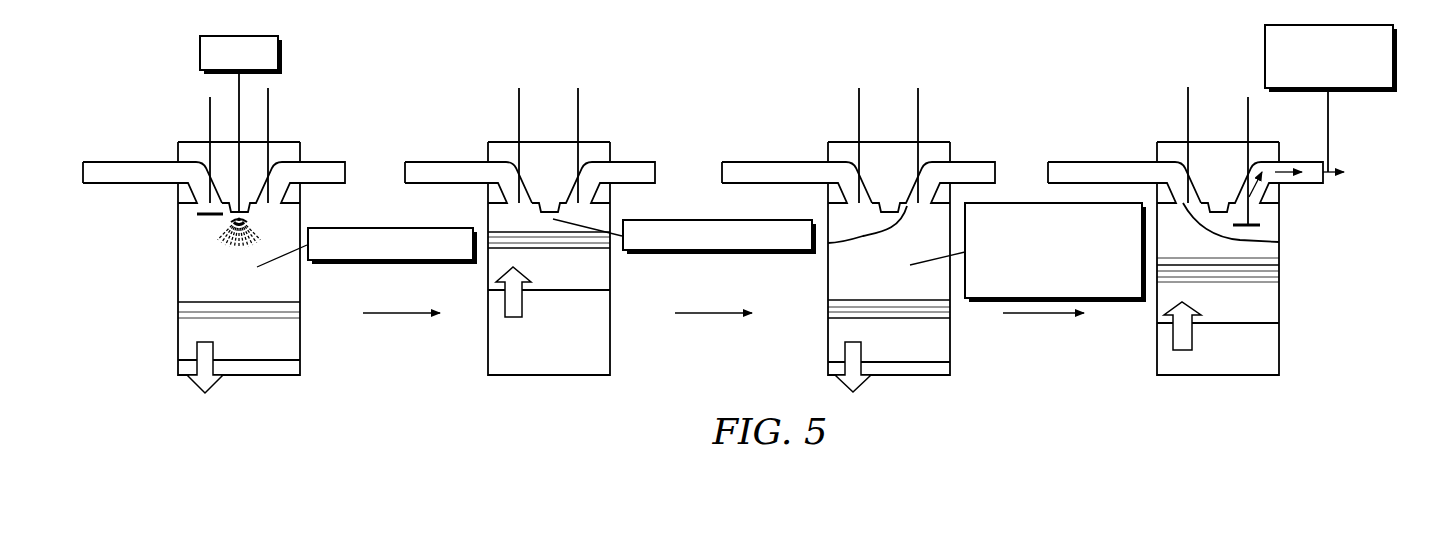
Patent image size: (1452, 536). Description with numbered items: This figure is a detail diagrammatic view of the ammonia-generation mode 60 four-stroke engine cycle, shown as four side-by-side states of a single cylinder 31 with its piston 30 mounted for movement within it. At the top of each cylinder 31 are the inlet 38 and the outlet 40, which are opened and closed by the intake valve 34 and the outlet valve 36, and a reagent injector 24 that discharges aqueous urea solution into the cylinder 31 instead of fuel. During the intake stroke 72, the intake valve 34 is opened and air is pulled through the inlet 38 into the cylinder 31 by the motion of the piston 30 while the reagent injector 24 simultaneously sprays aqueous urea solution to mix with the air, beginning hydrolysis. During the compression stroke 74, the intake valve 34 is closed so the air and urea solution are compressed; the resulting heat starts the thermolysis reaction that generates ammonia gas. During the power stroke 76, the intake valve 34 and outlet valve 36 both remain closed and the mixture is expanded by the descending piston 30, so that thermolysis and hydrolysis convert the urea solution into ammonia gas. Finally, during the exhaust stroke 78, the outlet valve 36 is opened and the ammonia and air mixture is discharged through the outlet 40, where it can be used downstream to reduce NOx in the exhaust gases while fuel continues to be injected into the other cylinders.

The ammonia-generation mode 60 is at (136, 50).
The reagent injector 24 is at (283, 56).
The inlet 38 is at (128, 173).
The outlet 40 is at (319, 172).
The intake stroke 72 is at (364, 146).
The compression stroke 74 is at (649, 145).
The power stroke 76 is at (990, 148).
The exhaust stroke 78 is at (1360, 153).
The outlet valve 36 is at (255, 204).
The intake valve 34 is at (197, 214).
The cylinder 31 is at (191, 283).
The piston 30 is at (191, 332).